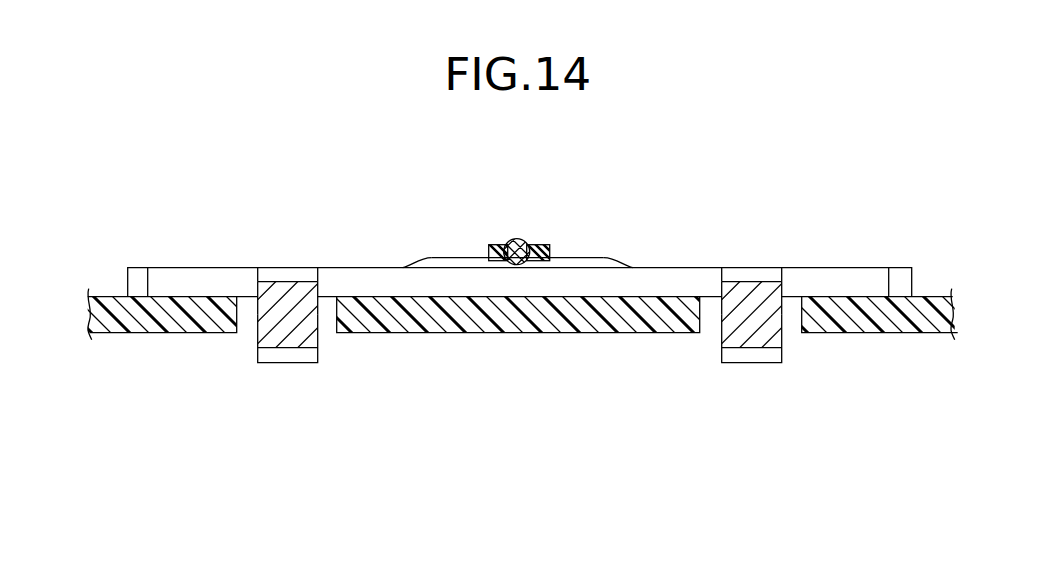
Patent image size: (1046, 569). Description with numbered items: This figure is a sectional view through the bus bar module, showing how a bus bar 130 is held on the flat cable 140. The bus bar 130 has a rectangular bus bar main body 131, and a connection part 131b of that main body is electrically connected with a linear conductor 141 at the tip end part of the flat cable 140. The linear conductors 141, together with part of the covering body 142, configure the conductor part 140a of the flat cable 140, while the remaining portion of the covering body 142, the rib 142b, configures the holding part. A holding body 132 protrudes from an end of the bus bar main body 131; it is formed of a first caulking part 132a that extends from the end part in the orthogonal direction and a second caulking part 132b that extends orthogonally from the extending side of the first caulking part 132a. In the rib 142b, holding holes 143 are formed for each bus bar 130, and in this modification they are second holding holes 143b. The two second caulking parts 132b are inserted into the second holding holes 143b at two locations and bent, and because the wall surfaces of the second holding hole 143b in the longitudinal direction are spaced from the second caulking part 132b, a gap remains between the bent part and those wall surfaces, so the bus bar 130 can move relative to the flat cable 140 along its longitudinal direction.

The bus bar 130 is at (621, 221).
The bus bar main body 131 is at (621, 217).
The connection part 131b is at (448, 258).
The holding body 132 is at (497, 306).
The first caulking part 132a is at (288, 276).
The second caulking part 132b is at (288, 352).
The flat cable 140 is at (94, 240).
The conductor part 140a is at (500, 245).
The linear conductor 141 is at (514, 242).
The covering body 142 is at (648, 380).
The rib 142b is at (513, 336).
The holding hole 143 is at (506, 373).
The second holding hole 143b is at (248, 336).